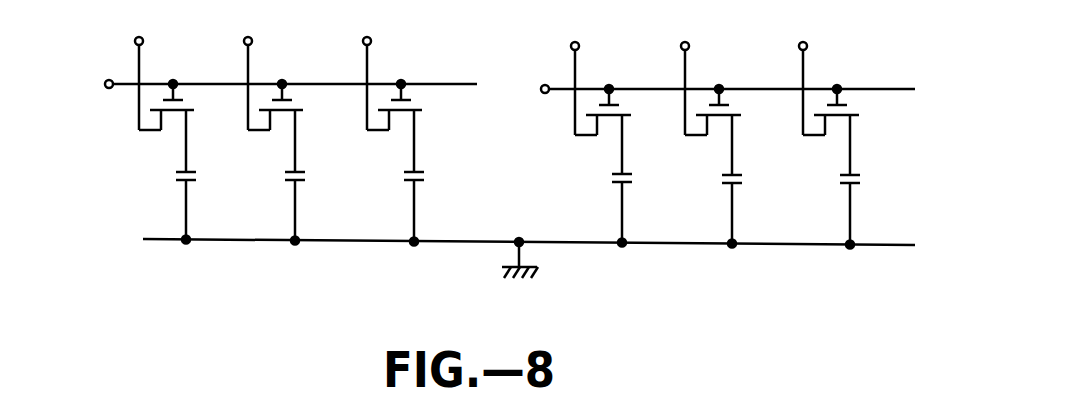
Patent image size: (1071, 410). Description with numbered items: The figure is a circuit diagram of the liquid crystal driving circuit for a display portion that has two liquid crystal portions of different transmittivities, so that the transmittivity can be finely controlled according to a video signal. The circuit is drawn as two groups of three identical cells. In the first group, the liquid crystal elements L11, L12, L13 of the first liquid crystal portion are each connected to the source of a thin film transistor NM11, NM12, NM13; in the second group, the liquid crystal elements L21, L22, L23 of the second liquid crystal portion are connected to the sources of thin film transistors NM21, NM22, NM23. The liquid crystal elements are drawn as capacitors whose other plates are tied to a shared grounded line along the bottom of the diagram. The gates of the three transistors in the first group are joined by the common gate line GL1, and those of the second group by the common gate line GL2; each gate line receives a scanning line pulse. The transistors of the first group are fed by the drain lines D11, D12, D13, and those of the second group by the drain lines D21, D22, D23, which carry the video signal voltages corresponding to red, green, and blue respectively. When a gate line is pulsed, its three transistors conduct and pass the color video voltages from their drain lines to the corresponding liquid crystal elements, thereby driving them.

The common gate line GL1 is at (267, 86).
The common gate line GL2 is at (701, 89).
The drain line D11 is at (141, 68).
The drain line D12 is at (250, 68).
The drain line D13 is at (368, 68).
The drain line D21 is at (576, 72).
The drain line D22 is at (683, 72).
The drain line D23 is at (802, 72).
The thin film transistor NM11 is at (189, 126).
The thin film transistor NM12 is at (302, 126).
The thin film transistor NM13 is at (421, 126).
The thin film transistor NM21 is at (628, 129).
The thin film transistor NM22 is at (741, 130).
The thin film transistor NM23 is at (860, 130).
The liquid crystal element L11 is at (205, 206).
The liquid crystal element L12 is at (315, 206).
The liquid crystal element L13 is at (438, 208).
The liquid crystal element L21 is at (644, 209).
The liquid crystal element L22 is at (757, 210).
The liquid crystal element L23 is at (877, 210).